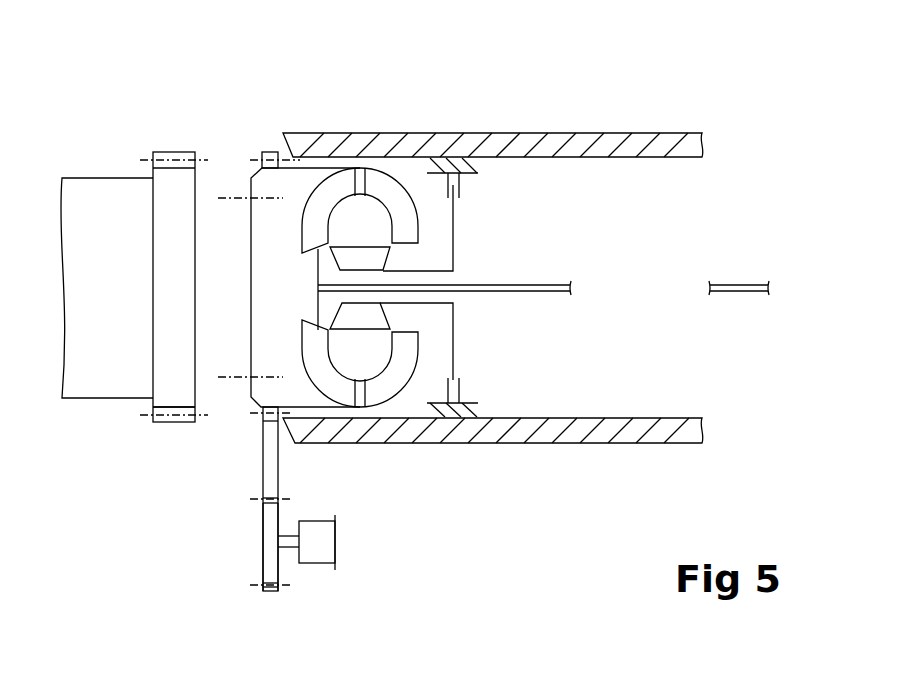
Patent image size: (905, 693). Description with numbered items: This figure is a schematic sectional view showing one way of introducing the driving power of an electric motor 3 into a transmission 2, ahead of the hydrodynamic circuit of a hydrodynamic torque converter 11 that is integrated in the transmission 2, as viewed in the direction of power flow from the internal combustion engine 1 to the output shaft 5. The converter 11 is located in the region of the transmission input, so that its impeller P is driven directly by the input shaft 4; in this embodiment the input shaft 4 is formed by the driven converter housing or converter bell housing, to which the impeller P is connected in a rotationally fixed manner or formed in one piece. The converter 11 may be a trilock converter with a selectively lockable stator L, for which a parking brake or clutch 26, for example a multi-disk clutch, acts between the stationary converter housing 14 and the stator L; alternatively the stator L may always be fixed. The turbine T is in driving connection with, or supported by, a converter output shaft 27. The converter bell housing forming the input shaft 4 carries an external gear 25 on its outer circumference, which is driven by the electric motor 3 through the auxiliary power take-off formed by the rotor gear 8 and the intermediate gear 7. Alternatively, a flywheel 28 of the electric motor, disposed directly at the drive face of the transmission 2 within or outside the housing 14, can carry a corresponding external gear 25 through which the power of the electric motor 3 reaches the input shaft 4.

The internal combustion engine 1 is at (102, 186).
The transmission 2 is at (493, 262).
The electric motor 3 is at (315, 561).
The input shaft 4 is at (258, 180).
The output shaft 5 is at (748, 283).
The intermediate gear 7 is at (270, 474).
The rotor gear 8 is at (270, 548).
The hydrodynamic torque converter 11 is at (386, 114).
The converter housing 14 is at (423, 444).
The external gear 25 is at (165, 420).
The parking brake or clutch 26 is at (462, 190).
The converter output shaft 27 is at (553, 283).
The flywheel 28 is at (175, 185).